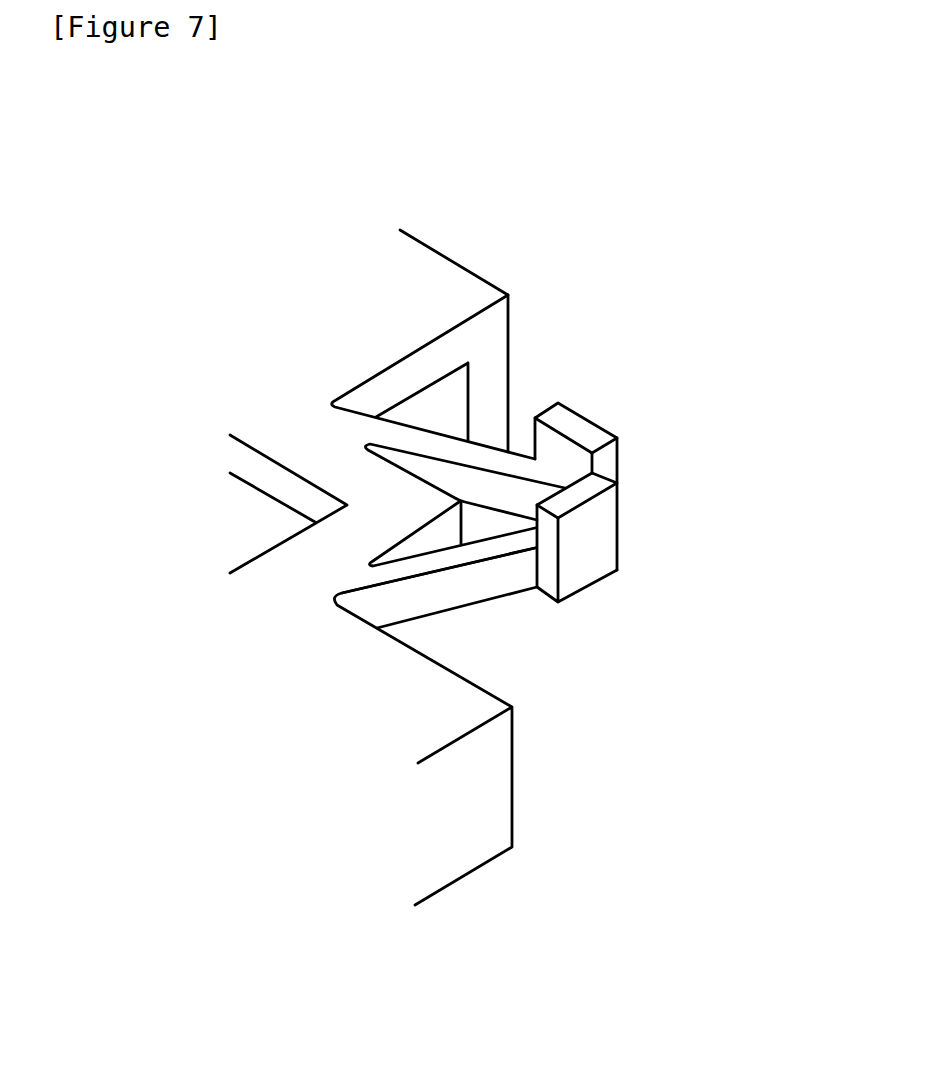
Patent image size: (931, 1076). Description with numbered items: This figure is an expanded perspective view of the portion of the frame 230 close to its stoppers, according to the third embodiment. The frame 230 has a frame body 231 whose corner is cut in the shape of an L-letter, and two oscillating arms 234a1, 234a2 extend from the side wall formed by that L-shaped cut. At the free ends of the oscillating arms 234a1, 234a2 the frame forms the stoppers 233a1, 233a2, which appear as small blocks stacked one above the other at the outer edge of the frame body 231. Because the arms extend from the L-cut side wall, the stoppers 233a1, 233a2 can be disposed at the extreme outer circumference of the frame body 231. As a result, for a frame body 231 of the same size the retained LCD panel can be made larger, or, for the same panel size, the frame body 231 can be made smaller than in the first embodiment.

The frame 230 is at (440, 244).
The frame body 231 is at (481, 277).
The stopper 233a1 is at (578, 542).
The stopper 233a2 is at (574, 424).
The oscillating arm 234a1 is at (447, 598).
The oscillating arm 234a2 is at (410, 442).